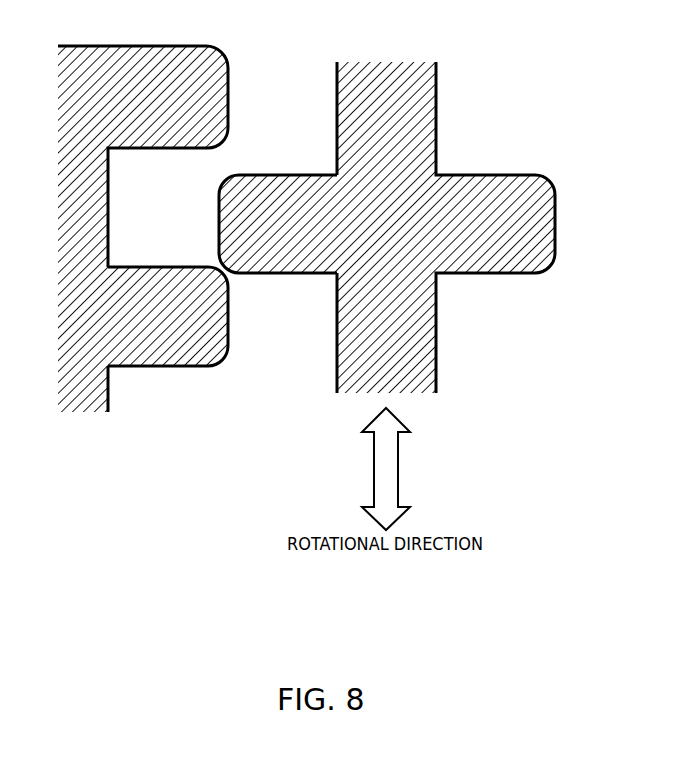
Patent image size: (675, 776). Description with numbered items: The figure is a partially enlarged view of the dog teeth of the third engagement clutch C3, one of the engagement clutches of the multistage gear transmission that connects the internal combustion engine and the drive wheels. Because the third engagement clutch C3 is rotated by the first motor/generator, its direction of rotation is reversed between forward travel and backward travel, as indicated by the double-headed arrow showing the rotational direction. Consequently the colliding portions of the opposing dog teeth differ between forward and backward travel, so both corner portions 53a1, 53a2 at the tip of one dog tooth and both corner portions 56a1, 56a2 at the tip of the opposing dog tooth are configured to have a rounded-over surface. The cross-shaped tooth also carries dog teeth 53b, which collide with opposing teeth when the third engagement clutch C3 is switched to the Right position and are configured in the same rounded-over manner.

The third engagement clutch C3 is at (518, 30).
The dog teeth 53b is at (537, 228).
The corner portion 53a2 is at (221, 181).
The corner portion 53a1 is at (224, 271).
The corner portion 56a2 is at (219, 266).
The corner portion 56a1 is at (224, 364).